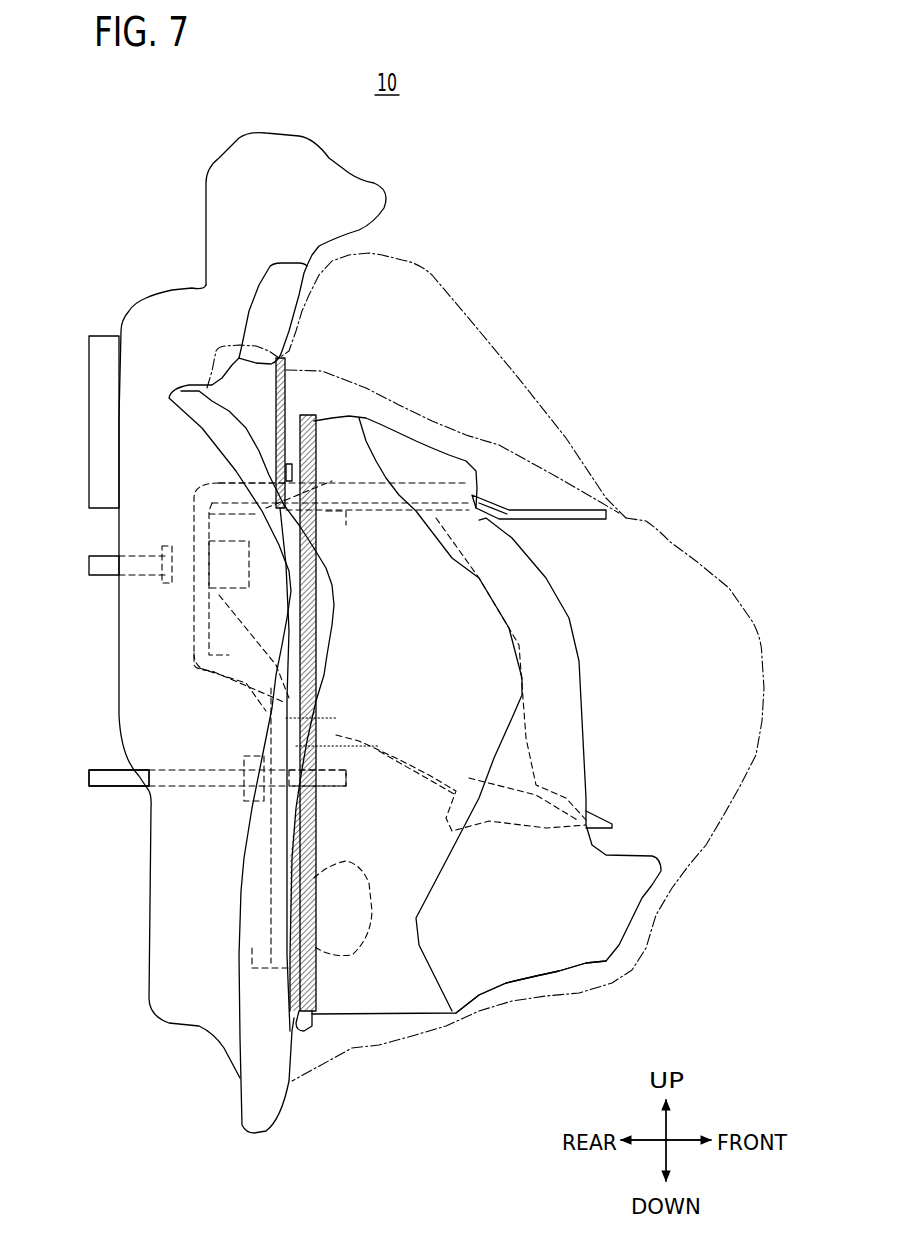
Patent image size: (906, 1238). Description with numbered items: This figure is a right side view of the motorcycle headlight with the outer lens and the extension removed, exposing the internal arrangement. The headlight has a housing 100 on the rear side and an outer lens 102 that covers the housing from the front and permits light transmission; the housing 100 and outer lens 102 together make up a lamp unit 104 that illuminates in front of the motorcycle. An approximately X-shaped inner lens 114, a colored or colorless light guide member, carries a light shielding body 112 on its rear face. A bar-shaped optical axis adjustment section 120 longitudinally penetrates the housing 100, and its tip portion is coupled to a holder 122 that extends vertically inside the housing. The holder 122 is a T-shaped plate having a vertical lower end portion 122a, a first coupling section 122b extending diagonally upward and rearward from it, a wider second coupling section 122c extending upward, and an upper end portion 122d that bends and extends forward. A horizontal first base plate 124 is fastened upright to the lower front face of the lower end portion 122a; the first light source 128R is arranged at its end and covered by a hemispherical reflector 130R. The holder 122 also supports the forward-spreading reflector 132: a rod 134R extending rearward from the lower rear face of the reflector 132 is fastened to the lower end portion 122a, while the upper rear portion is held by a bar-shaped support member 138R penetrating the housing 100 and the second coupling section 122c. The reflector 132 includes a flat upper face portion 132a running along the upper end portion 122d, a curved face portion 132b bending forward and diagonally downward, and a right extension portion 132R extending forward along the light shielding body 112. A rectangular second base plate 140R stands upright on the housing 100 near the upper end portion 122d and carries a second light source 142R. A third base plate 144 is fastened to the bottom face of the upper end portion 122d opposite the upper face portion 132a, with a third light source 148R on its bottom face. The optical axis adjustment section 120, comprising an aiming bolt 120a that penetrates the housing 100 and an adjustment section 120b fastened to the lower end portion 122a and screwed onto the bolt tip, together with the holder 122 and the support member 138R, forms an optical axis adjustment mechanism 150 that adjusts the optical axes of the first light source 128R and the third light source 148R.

The housing 100 is at (205, 242).
The outer lens 102 is at (690, 545).
The lamp unit 104 is at (440, 260).
The light shielding body 112 is at (297, 1035).
The inner lens 114 is at (553, 962).
The optical axis adjustment section 120 is at (86, 867).
The aiming bolt 120a is at (110, 788).
The adjustment section 120b is at (247, 807).
The holder 122 is at (262, 940).
The lower end portion 122a is at (265, 907).
The first coupling section 122b is at (200, 680).
The second coupling section 122c is at (200, 617).
The upper end portion 122d is at (223, 483).
The first base plate 124 is at (288, 962).
The first light source 128R is at (355, 985).
The reflector 130R is at (318, 880).
The reflector 132 is at (553, 508).
The upper face portion 132a is at (535, 511).
The curved face portion 132b is at (458, 845).
The right extension portion 132R is at (523, 647).
The rod 134R is at (360, 737).
The support member 138R is at (97, 568).
The second base plate 140R is at (270, 405).
The second light source 142R is at (293, 477).
The third base plate 144 is at (380, 470).
The third light source 148R is at (325, 520).
The optical axis adjustment mechanism 150 is at (225, 705).